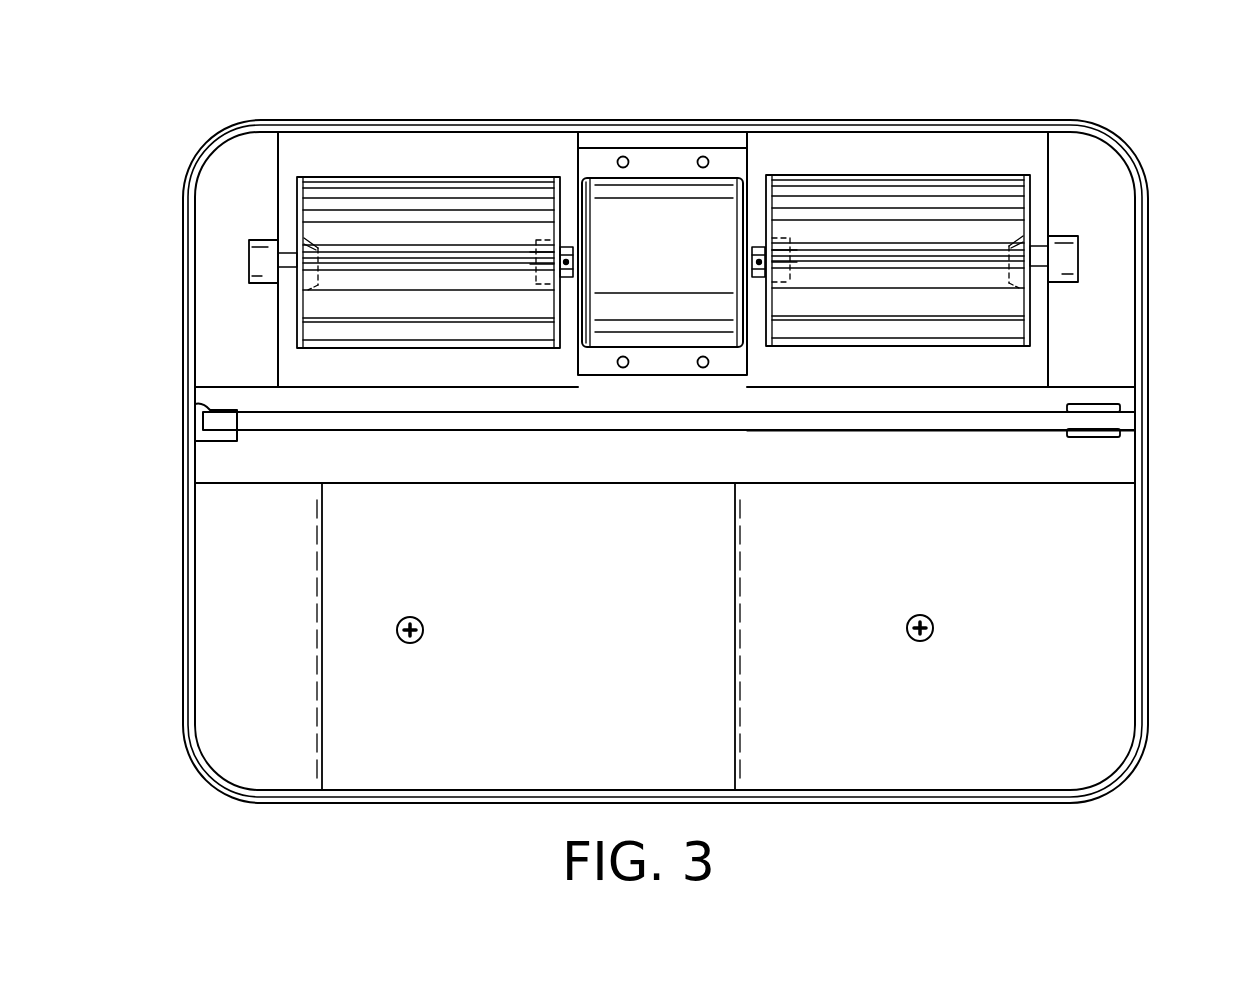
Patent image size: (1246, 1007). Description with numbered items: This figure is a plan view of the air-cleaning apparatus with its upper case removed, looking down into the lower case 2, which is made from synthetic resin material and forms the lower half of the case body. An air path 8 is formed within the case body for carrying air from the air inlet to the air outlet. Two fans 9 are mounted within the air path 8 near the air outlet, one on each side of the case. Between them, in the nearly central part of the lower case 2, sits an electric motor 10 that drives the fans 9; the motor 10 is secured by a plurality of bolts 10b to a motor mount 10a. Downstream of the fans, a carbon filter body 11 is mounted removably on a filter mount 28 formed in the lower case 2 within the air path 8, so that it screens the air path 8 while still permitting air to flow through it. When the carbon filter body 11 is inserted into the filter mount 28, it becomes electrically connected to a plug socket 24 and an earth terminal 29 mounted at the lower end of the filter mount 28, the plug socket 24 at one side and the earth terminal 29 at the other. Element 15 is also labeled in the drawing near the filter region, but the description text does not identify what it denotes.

The lower case 2 is at (183, 590).
The air path 8 is at (358, 165).
The fans 9 is at (443, 188).
The electric motor 10 is at (660, 190).
The motor mount 10a is at (683, 142).
The bolts 10b is at (620, 156).
The carbon filter body 11 is at (693, 433).
The bottom plate 15 is at (800, 430).
The plug socket 24 is at (197, 403).
The filter mount 28 is at (935, 433).
The earth terminal 29 is at (1100, 403).